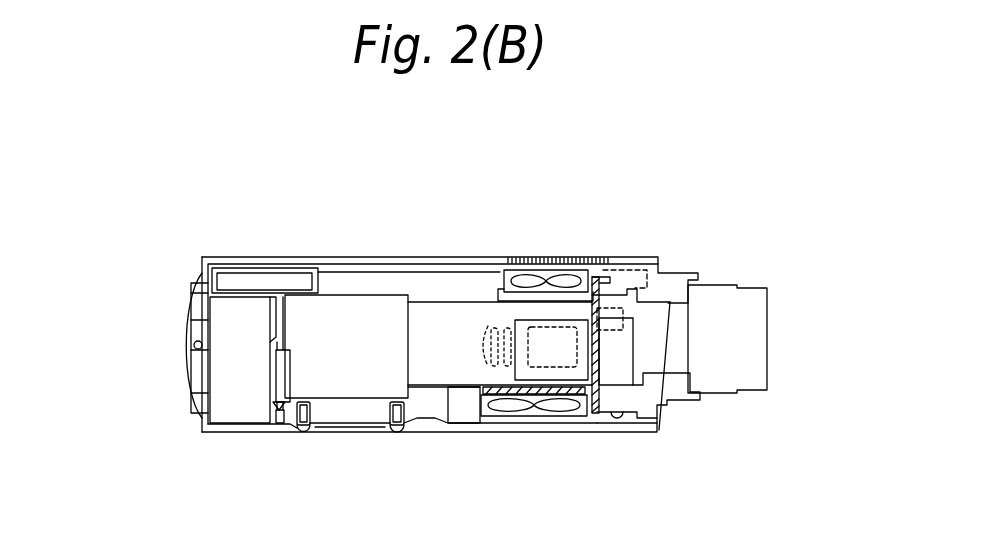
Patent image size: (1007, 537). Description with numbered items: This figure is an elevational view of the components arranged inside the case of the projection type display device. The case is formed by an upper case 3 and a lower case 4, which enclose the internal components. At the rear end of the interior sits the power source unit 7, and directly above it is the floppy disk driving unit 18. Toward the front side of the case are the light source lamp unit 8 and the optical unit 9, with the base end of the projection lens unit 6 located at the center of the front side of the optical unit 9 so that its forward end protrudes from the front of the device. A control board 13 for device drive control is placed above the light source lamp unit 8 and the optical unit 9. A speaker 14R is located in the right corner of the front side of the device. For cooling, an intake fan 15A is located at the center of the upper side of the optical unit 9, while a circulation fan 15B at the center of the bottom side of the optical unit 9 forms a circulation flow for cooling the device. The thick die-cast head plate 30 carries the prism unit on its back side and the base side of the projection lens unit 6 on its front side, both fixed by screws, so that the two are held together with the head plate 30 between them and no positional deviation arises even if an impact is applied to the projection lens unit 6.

The upper case 3 is at (230, 257).
The lower case 4 is at (251, 434).
The projection lens unit 6 is at (762, 271).
The power source unit 7 is at (246, 378).
The light source lamp unit 8 is at (314, 314).
The optical unit 9 is at (461, 285).
The control board 13 is at (384, 256).
The speaker 14R is at (650, 270).
The intake fan 15A is at (524, 280).
The circulation fan 15B is at (510, 412).
The floppy disk driving unit 18 is at (228, 282).
The head plate 30 is at (600, 277).